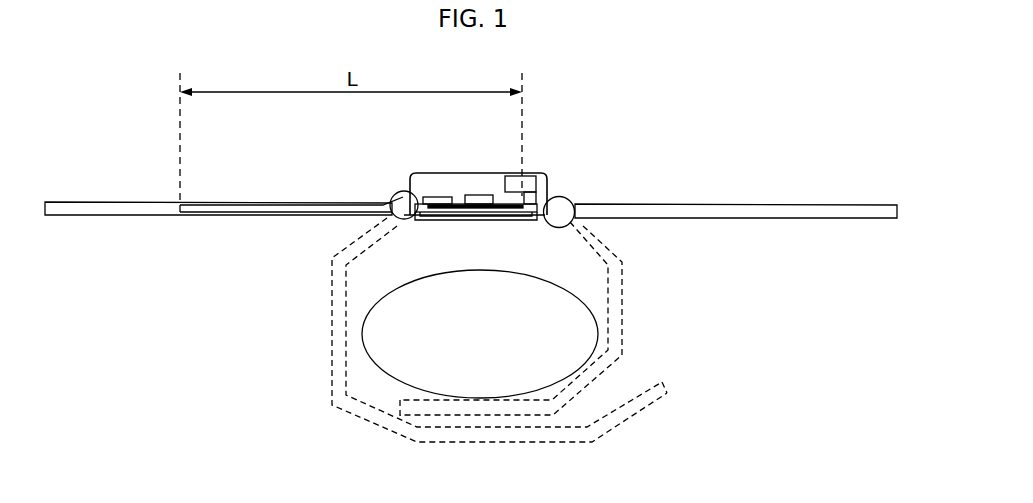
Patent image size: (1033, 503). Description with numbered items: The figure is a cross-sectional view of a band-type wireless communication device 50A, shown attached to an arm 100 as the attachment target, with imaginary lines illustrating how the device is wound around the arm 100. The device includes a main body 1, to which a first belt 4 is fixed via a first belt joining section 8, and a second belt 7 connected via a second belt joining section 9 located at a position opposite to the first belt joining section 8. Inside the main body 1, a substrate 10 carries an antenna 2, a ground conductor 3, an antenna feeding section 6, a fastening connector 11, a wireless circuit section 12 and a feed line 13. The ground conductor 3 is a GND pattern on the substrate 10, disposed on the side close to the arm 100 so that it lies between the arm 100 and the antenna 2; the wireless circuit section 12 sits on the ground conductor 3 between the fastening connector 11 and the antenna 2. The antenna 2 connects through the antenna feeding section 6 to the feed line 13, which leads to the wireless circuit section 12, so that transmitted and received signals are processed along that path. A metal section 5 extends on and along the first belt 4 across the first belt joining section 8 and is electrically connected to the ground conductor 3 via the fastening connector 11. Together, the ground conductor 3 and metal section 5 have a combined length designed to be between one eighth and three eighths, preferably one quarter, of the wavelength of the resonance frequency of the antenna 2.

The main body 1 is at (420, 172).
The antenna 2 is at (535, 178).
The ground conductor 3 is at (452, 197).
The first belt 4 is at (105, 206).
The metal section 5 is at (233, 206).
The antenna feeding section 6 is at (529, 222).
The second belt 7 is at (827, 205).
The first belt joining section 8 is at (402, 190).
The second belt joining section 9 is at (559, 196).
The substrate 10 is at (482, 222).
The fastening connector 11 is at (426, 223).
The wireless circuit section 12 is at (478, 195).
The feed line 13 is at (505, 177).
The band-type wireless communication device 50A is at (789, 113).
The arm 100 is at (572, 318).